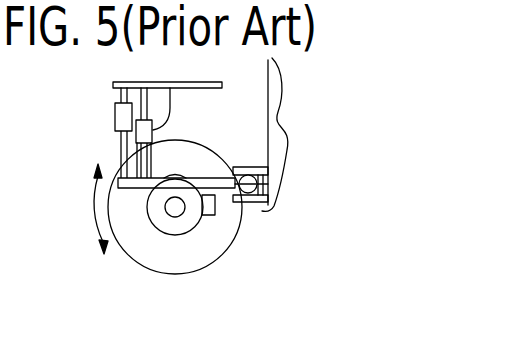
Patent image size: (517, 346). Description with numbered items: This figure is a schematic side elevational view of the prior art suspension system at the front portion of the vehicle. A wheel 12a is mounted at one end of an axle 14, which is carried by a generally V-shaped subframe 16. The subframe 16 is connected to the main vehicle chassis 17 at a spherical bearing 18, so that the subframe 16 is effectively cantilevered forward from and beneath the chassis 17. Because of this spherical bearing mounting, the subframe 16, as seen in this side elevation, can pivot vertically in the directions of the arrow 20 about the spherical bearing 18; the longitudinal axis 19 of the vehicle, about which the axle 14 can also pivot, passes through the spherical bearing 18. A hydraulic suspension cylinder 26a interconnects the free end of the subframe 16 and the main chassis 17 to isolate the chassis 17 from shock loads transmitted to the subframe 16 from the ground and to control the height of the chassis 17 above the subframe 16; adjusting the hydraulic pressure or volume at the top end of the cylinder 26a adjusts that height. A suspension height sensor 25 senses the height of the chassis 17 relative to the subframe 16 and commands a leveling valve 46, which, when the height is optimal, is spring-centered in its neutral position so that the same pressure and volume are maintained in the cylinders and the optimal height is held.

The wheel 12a is at (131, 254).
The axle 14 is at (186, 220).
The subframe 16 is at (213, 178).
The main vehicle chassis 17 is at (215, 82).
The spherical bearing 18 is at (246, 175).
The longitudinal axis 19 is at (263, 211).
The arrow 20 is at (93, 222).
The suspension height sensor 25 is at (119, 157).
The hydraulic suspension cylinder 26a is at (170, 82).
The leveling valve 46 is at (115, 113).